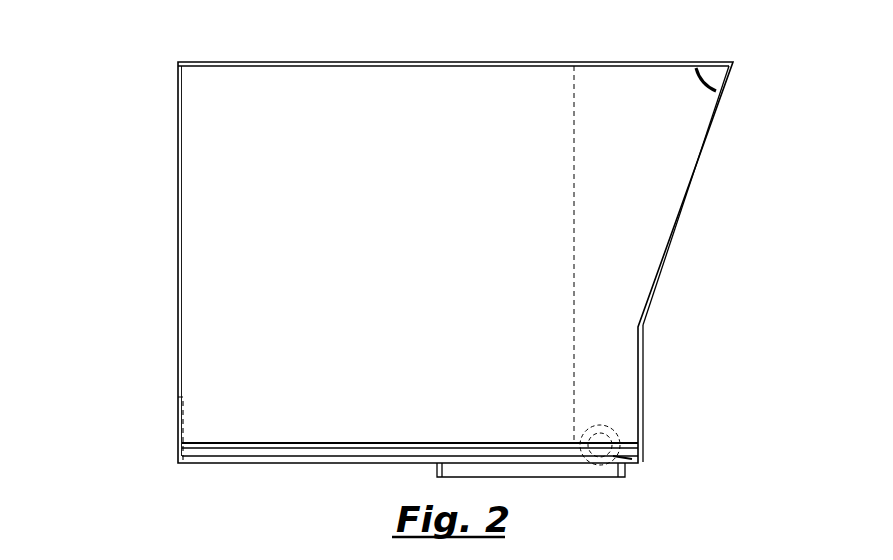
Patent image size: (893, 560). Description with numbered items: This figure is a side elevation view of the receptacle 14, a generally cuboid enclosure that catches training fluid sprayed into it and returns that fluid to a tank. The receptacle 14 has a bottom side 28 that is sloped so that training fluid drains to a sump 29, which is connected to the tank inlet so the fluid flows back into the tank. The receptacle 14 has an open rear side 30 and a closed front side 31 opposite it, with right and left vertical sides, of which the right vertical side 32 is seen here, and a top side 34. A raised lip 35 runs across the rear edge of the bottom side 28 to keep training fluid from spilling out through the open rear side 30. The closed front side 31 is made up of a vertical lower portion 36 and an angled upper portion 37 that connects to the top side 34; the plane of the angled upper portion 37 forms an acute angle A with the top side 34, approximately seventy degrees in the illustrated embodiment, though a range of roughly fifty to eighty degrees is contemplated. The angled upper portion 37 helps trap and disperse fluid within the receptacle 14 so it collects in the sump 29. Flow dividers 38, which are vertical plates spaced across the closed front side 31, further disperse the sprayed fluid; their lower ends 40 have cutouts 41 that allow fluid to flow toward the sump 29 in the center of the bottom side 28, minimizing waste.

The receptacle 14 is at (178, 144).
The bottom side 28 is at (243, 443).
The sump 29 is at (557, 470).
The open rear side 30 is at (178, 260).
The closed front side 31 is at (680, 228).
The right vertical side 32 is at (245, 96).
The top side 34 is at (345, 63).
The raised lip 35 is at (178, 420).
The vertical lower portion 36 is at (643, 358).
The angled upper portion 37 is at (708, 139).
The flow dividers 38 is at (597, 278).
The lower ends 40 is at (637, 421).
The cutouts 41 is at (645, 463).
The acute angle A is at (703, 85).